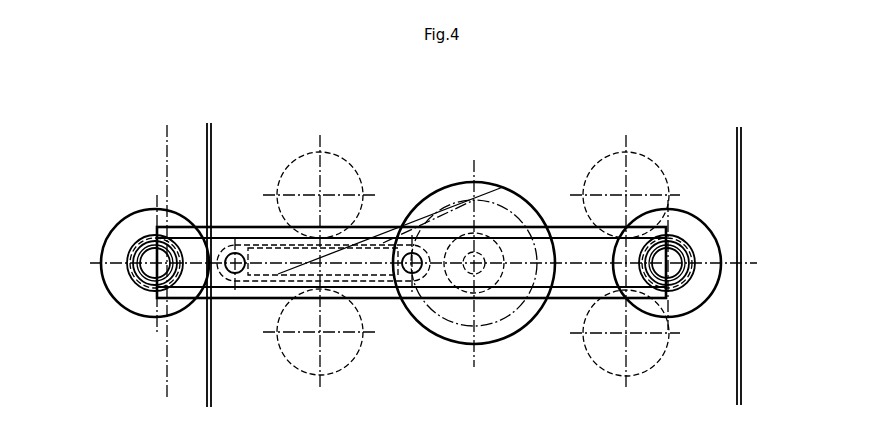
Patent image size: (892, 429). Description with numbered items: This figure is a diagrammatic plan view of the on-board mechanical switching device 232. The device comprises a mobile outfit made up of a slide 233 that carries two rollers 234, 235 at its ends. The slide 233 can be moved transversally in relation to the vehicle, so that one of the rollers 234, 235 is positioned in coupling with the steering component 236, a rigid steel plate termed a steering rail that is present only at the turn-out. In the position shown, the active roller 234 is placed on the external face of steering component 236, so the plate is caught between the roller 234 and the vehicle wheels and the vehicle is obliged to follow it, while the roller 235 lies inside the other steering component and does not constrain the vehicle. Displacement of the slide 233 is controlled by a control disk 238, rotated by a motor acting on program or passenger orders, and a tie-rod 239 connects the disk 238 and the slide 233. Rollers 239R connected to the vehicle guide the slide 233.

The switching device 232 is at (538, 193).
The slide 233 is at (431, 230).
The roller 234 is at (133, 211).
The roller 235 is at (705, 224).
The steering component 236 is at (209, 124).
The control disk 238 is at (482, 181).
The tie-rod 239 is at (382, 250).
The rollers 239R is at (283, 306).